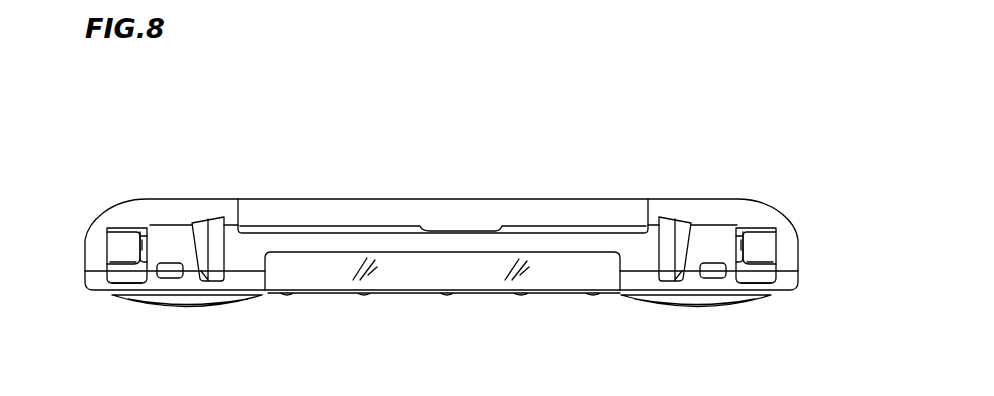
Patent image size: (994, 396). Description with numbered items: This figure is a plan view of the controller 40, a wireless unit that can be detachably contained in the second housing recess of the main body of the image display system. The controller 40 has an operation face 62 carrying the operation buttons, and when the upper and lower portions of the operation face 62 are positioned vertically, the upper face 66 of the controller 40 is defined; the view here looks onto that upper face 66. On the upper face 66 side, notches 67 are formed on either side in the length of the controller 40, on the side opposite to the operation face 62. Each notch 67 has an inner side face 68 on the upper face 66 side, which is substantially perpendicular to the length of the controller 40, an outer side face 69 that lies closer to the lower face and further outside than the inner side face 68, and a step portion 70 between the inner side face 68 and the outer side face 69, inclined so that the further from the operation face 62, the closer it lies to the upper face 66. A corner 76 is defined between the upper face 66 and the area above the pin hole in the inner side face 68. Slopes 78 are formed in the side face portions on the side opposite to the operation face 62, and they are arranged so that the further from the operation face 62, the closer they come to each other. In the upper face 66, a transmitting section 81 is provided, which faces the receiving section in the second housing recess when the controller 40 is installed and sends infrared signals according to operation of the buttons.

The controller 40 is at (88, 221).
The operation face 62 is at (621, 293).
The upper face 66 is at (537, 243).
The notch 67 is at (149, 207).
The inner side face 68 is at (145, 258).
The outer side face 69 is at (127, 237).
The step portion 70 is at (140, 249).
The corner 76 is at (143, 247).
The slope 78 is at (141, 235).
The transmitting section 81 is at (477, 277).